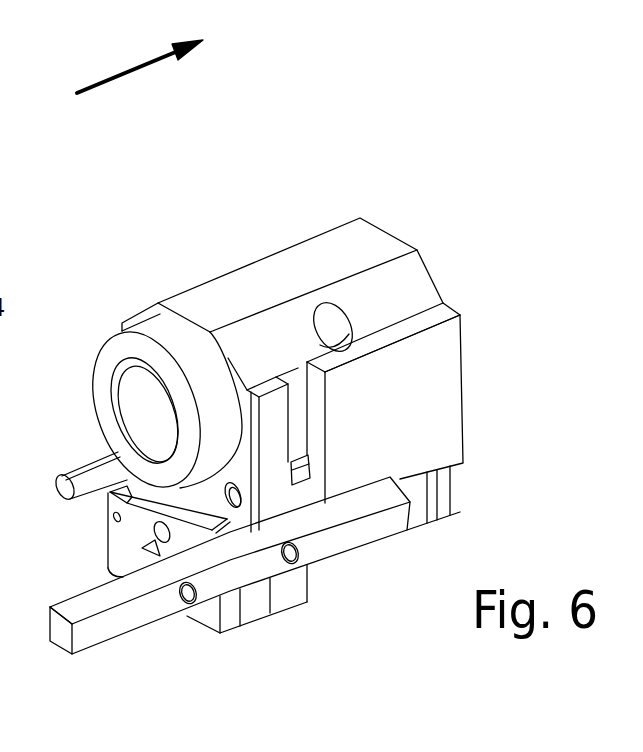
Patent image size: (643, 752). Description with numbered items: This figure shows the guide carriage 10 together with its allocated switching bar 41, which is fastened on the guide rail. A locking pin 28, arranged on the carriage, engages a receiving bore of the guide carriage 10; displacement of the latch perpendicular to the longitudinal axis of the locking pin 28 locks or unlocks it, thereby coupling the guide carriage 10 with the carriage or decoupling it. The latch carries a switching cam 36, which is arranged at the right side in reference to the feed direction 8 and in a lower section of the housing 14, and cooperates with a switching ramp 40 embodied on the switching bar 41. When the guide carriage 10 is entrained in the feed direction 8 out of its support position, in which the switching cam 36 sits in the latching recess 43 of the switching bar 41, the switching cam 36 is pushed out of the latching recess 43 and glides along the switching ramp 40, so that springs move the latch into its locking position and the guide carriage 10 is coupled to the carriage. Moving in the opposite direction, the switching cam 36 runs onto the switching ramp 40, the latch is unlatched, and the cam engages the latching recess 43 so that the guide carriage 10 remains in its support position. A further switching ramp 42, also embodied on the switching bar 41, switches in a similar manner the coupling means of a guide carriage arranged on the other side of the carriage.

The feed direction 8 is at (137, 73).
The guide carriage 10 is at (259, 252).
The housing 14 is at (442, 360).
The locking pin 28 is at (88, 475).
The switching cam 36 is at (310, 490).
The switching ramp 40 is at (350, 484).
The switching bar 41 is at (357, 525).
The switching ramp 42 is at (80, 584).
The latching recess 43 is at (222, 530).